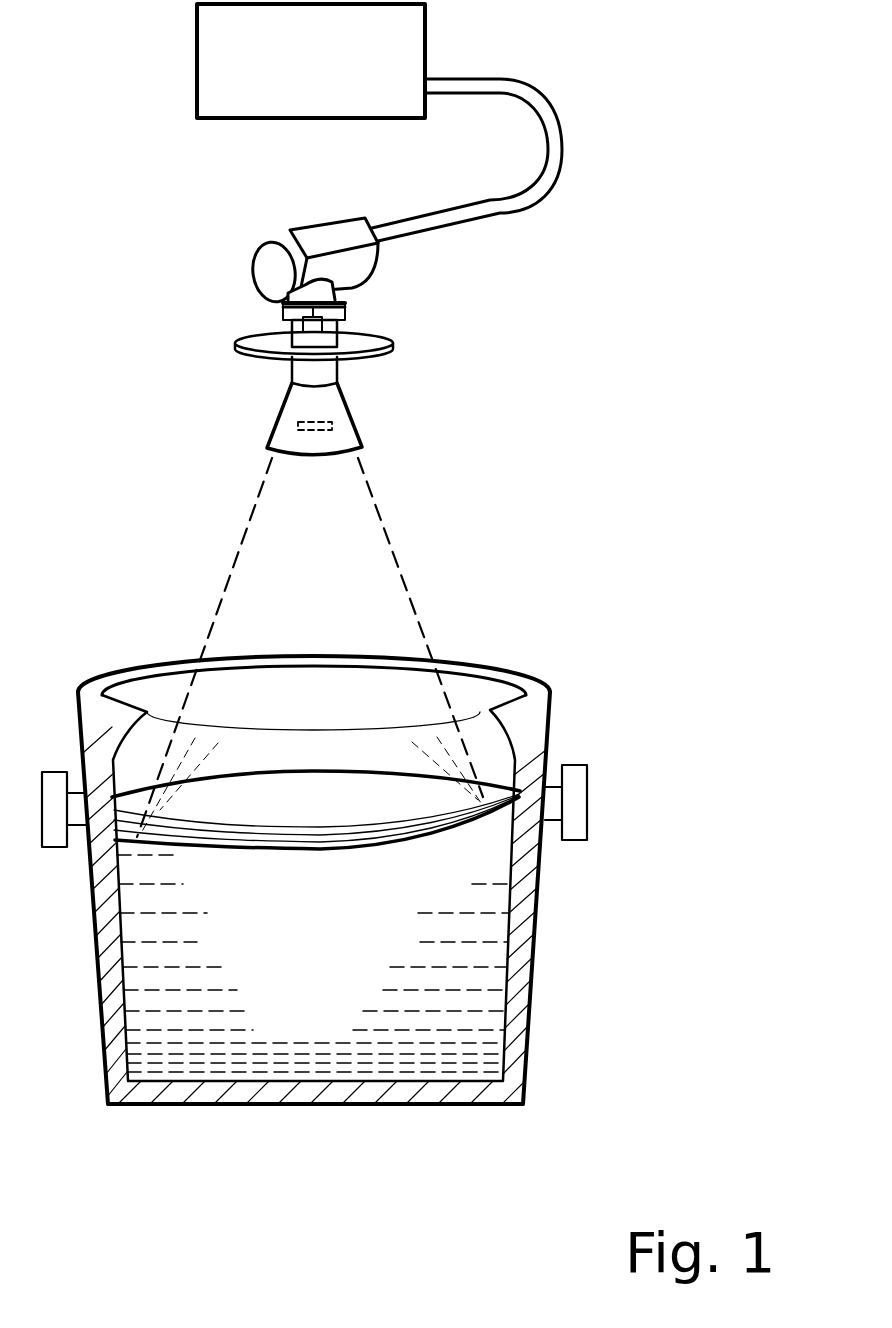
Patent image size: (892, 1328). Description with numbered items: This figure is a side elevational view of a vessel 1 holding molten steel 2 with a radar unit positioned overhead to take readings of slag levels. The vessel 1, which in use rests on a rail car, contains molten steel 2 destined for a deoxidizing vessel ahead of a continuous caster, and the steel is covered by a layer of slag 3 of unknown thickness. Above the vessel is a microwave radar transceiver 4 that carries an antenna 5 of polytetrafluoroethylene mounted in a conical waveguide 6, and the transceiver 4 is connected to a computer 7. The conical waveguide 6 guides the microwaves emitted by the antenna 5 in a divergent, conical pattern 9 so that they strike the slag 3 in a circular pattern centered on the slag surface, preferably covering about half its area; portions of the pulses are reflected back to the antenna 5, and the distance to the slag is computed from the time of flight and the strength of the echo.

The vessel 1 is at (523, 957).
The molten steel 2 is at (440, 1027).
The slag 3 is at (462, 825).
The radar transceiver 4 is at (258, 248).
The antenna 5 is at (332, 426).
The conical waveguide 6 is at (362, 446).
The computer 7 is at (197, 82).
The conical pattern 9 is at (235, 547).